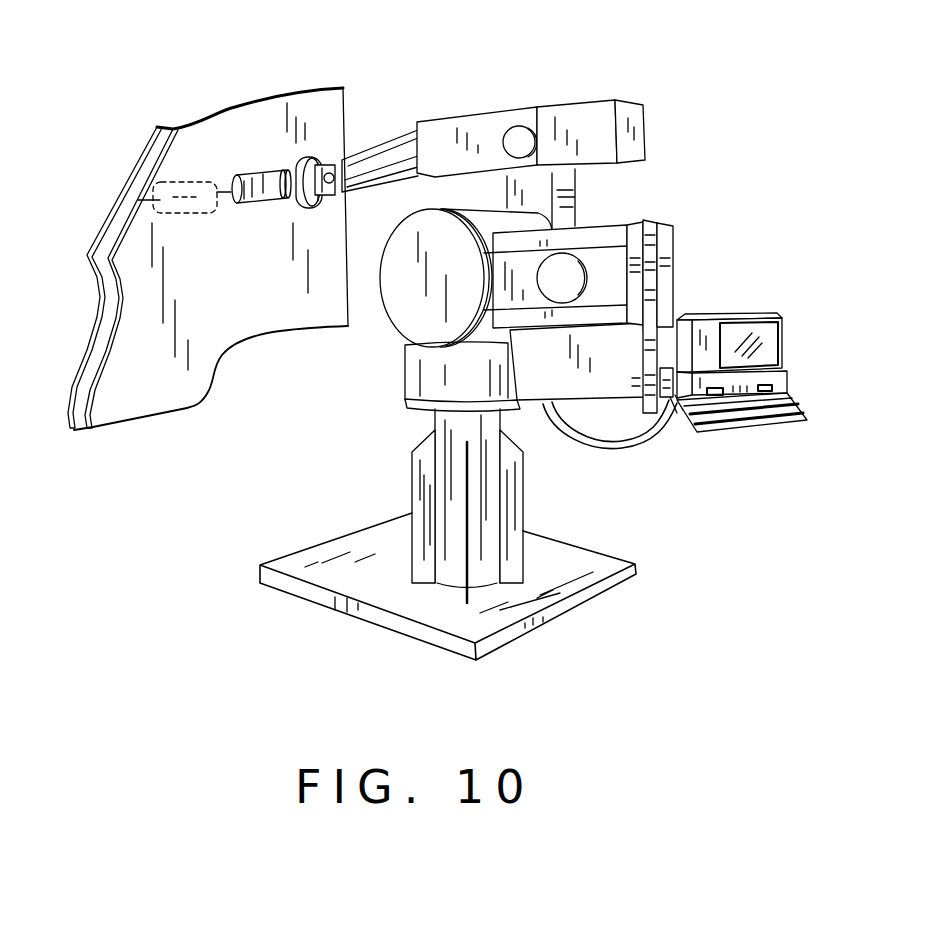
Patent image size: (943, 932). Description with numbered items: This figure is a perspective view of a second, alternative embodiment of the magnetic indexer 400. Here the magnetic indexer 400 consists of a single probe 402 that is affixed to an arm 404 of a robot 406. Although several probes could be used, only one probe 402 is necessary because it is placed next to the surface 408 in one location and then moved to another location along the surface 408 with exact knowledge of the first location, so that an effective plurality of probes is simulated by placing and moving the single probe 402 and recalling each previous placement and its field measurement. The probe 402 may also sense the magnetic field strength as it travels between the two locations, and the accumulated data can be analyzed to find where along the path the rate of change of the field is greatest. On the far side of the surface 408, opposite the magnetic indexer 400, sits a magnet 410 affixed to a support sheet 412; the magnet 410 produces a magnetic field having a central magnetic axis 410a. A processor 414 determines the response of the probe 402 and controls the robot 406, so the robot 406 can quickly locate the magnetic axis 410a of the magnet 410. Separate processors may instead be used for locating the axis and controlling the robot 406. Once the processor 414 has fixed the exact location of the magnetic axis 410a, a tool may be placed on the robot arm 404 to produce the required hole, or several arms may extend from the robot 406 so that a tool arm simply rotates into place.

The magnetic indexer 400 is at (320, 144).
The probe 402 is at (268, 172).
The arm 404 is at (445, 138).
The robot 406 is at (712, 146).
The surface 408 is at (128, 237).
The magnet 410 is at (188, 181).
The central magnetic axis 410a is at (133, 182).
The support sheet 412 is at (88, 278).
The processor 414 is at (742, 310).